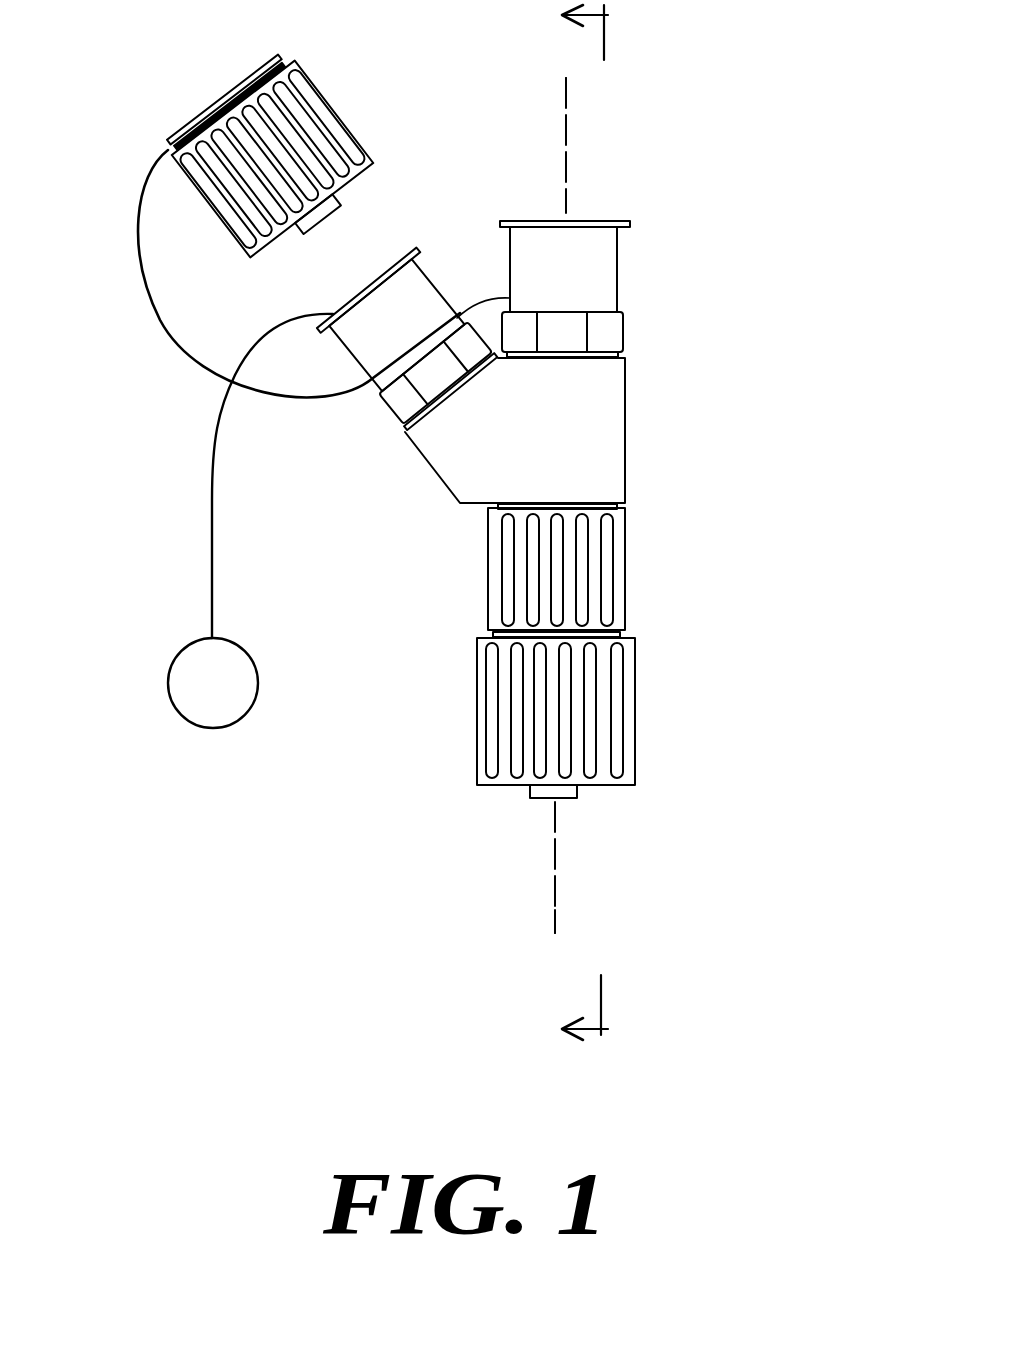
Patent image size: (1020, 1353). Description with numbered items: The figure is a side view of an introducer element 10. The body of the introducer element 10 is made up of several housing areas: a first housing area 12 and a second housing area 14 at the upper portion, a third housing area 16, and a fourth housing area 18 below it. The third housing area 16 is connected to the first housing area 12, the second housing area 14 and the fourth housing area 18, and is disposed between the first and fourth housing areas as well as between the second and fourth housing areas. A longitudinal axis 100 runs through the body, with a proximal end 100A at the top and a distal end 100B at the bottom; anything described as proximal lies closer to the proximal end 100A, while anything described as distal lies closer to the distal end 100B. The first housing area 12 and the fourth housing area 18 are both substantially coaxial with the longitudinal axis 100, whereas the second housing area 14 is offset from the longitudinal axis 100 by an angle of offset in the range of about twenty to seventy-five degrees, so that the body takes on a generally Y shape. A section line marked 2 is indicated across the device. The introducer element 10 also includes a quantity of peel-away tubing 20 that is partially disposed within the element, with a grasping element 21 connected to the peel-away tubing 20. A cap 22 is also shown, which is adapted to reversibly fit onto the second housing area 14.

The introducer element 10 is at (738, 487).
The first housing area 12 is at (640, 215).
The second housing area 14 is at (312, 332).
The third housing area 16 is at (550, 445).
The fourth housing area 18 is at (473, 510).
The peel-away tubing 20 is at (211, 530).
The grasping element 21 is at (205, 685).
The cap 22 is at (310, 80).
The longitudinal axis 100 is at (568, 162).
The proximal end 100A is at (563, 88).
The distal end 100B is at (553, 917).
The section line 2 is at (572, 520).